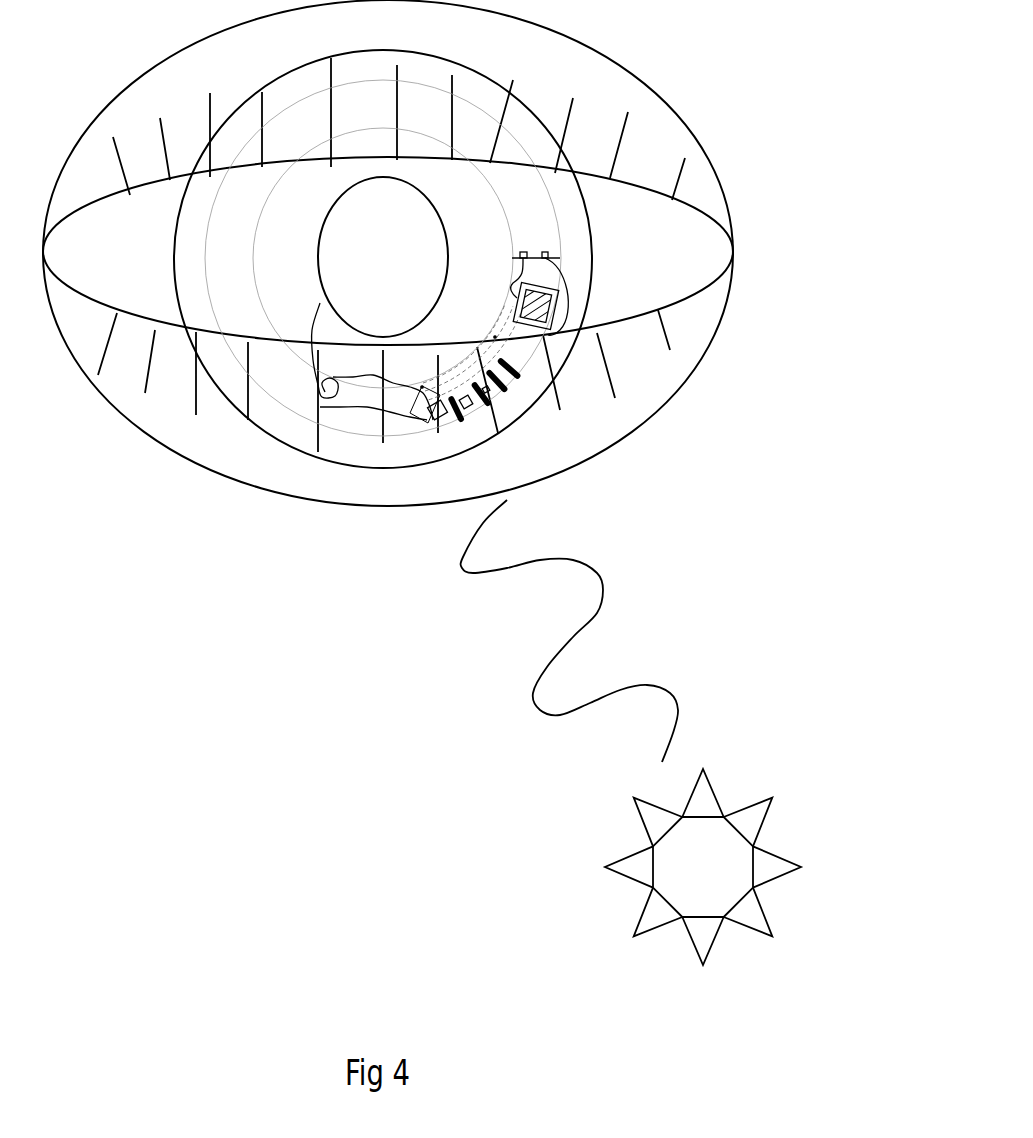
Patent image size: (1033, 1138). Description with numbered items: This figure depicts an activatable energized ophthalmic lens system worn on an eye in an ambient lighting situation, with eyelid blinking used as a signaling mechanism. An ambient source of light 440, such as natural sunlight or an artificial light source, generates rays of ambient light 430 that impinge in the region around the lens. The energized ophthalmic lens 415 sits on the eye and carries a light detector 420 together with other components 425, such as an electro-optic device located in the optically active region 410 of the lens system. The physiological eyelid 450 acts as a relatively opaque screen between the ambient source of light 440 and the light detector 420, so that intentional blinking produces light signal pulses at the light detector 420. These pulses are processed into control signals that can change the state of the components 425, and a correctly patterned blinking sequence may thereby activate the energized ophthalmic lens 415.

The optically active region 410 is at (450, 258).
The energized ophthalmic lens 415 is at (532, 110).
The light detector 420 is at (470, 377).
The components 425 is at (400, 470).
The rays of ambient light 430 is at (452, 578).
The ambient source of light 440 is at (655, 888).
The physiological eyelid 450 is at (177, 387).